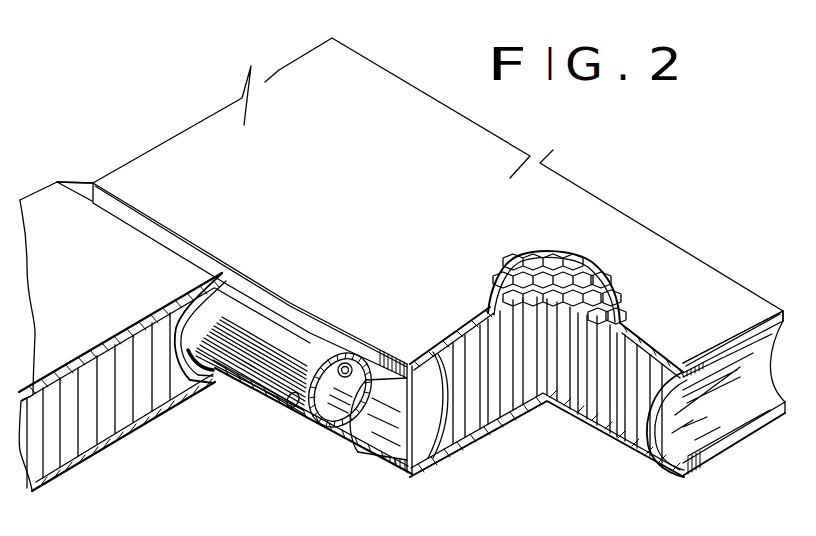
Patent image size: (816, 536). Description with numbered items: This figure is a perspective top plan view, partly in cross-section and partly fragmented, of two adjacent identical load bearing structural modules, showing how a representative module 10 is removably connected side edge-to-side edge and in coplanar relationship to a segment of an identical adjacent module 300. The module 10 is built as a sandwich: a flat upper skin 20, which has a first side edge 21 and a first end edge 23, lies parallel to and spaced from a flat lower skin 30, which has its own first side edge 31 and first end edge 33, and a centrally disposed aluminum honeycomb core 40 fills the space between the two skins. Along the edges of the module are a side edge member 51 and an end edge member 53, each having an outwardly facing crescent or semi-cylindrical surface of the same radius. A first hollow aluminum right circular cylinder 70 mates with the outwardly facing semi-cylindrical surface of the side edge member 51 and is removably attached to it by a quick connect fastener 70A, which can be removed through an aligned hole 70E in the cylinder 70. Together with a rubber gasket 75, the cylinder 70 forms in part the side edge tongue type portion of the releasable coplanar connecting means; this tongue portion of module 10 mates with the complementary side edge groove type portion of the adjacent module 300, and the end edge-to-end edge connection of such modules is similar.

The module 10 is at (619, 185).
The flat upper skin 20 is at (474, 215).
The first side edge 21 is at (205, 243).
The first end edge 23 is at (728, 338).
The flat lower skin 30 is at (460, 437).
The first side edge 31 is at (405, 478).
The first end edge 33 is at (737, 446).
The aluminum honeycomb core 40 is at (93, 428).
The side edge member 51 is at (422, 456).
The end edge member 53 is at (697, 437).
The hollow aluminum right circular cylinder 70 is at (258, 378).
The quick connect fastener 70A is at (348, 365).
The aligned hole 70E is at (292, 408).
The rubber gasket 75 is at (373, 407).
The module 300 is at (57, 177).